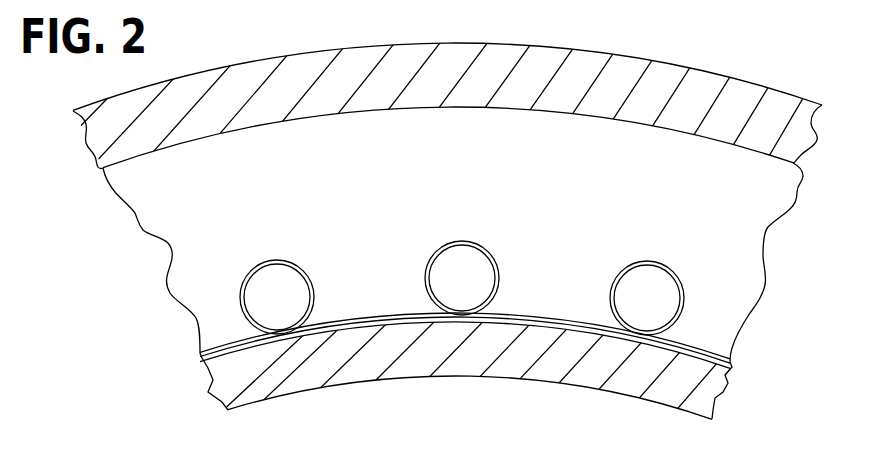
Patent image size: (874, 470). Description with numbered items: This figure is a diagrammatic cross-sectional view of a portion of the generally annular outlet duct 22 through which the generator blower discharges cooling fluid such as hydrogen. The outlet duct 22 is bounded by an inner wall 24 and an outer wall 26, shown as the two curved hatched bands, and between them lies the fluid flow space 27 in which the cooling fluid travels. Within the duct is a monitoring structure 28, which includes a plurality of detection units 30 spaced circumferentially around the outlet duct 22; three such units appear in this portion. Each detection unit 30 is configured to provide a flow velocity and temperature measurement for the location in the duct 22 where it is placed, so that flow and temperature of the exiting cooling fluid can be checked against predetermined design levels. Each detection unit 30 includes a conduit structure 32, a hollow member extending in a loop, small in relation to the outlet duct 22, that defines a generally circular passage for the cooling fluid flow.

The outlet duct 22 is at (95, 233).
The inner wall 24 is at (690, 400).
The outer wall 26 is at (777, 103).
The fluid flow space 27 is at (740, 255).
The monitoring structure 28 is at (226, 320).
The detection unit 30 is at (267, 261).
The conduit structure 32 is at (363, 316).